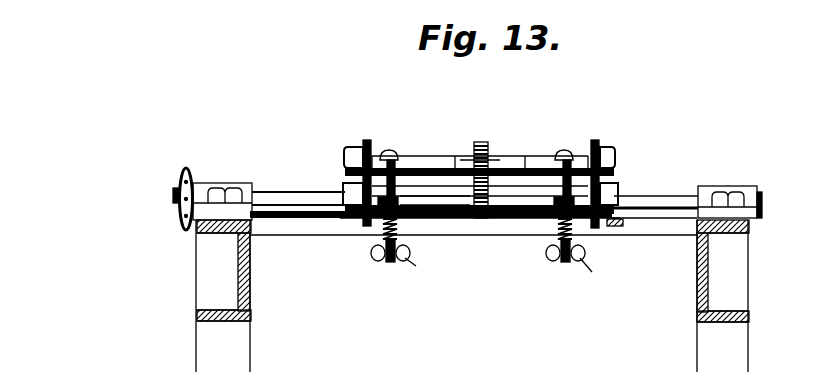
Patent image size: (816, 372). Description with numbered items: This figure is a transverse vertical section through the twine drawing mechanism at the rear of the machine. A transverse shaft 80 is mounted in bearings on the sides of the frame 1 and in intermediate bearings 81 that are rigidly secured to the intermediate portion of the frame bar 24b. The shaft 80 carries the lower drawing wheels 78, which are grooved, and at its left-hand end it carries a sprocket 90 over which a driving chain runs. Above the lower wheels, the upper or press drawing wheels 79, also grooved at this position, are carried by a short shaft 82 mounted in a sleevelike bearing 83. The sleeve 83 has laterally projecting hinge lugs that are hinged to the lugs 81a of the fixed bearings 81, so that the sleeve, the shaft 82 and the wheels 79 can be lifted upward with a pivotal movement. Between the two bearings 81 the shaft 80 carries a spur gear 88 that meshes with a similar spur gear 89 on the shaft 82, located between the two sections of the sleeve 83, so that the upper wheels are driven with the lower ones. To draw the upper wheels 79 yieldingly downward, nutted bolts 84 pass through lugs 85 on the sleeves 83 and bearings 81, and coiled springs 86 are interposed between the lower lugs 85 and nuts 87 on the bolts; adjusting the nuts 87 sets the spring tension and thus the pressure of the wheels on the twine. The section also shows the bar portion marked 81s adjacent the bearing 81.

The frame 1 is at (237, 342).
The frame bar 24b is at (304, 234).
The lower drawing wheel 78 is at (343, 190).
The upper drawing wheel 79 is at (366, 139).
The transverse shaft 80 is at (668, 202).
The intermediate bearing 81 is at (524, 217).
The hinge lug 81a is at (506, 154).
The bar extension 81s is at (451, 153).
The short shaft 82 is at (611, 158).
The sleevelike bearing 83 is at (531, 157).
The nutted bolt 84 is at (390, 262).
The lug 85 is at (401, 172).
The coiled spring 86 is at (400, 229).
The nut 87 is at (509, 273).
The spur gear 88 is at (478, 218).
The spur gear 89 is at (481, 142).
The sprocket 90 is at (187, 176).